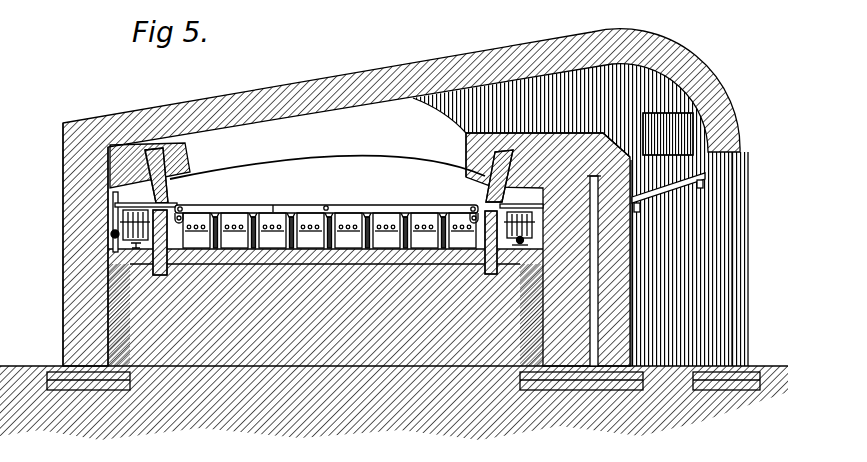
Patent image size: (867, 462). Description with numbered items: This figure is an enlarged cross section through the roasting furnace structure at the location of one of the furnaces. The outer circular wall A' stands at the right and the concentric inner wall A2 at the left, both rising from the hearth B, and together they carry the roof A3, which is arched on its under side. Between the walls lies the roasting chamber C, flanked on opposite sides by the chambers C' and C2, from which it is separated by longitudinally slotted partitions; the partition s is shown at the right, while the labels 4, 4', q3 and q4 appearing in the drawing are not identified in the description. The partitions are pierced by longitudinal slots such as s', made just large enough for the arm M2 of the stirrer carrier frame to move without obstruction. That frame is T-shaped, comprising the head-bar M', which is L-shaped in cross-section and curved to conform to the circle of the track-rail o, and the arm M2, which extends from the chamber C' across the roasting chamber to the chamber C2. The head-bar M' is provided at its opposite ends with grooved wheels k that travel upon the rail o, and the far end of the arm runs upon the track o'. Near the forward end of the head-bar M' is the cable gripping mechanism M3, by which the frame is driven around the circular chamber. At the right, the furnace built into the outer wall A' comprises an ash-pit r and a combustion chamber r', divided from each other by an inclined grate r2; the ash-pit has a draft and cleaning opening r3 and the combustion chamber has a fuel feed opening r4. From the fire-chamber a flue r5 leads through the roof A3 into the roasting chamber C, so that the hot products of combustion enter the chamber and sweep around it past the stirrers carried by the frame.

The roof A3 is at (401, 197).
The inner wall A2 is at (63, 297).
The outer circular wall A' is at (548, 249).
The hearth B is at (325, 307).
The grooved wheels k is at (148, 268).
The roasting chamber C is at (327, 177).
The side chamber C' is at (111, 197).
The side chamber C2 is at (548, 155).
The strut 4 is at (169, 176).
The bar 4' is at (146, 198).
The pin q3 is at (273, 205).
The pivot q4 is at (183, 208).
The arm M2 is at (418, 205).
The cable gripping mechanism M3 is at (118, 226).
The head-bar M' is at (540, 225).
The track-rail o is at (81, 244).
The track o' is at (541, 245).
The slotted partition s is at (483, 200).
The longitudinal slot s' is at (521, 198).
The ash-pit r is at (699, 259).
The combustion chamber r' is at (668, 188).
The inclined grate r2 is at (680, 184).
The draft and cleaning opening r3 is at (723, 268).
The fuel feed opening r4 is at (660, 120).
The flue r5 is at (541, 105).